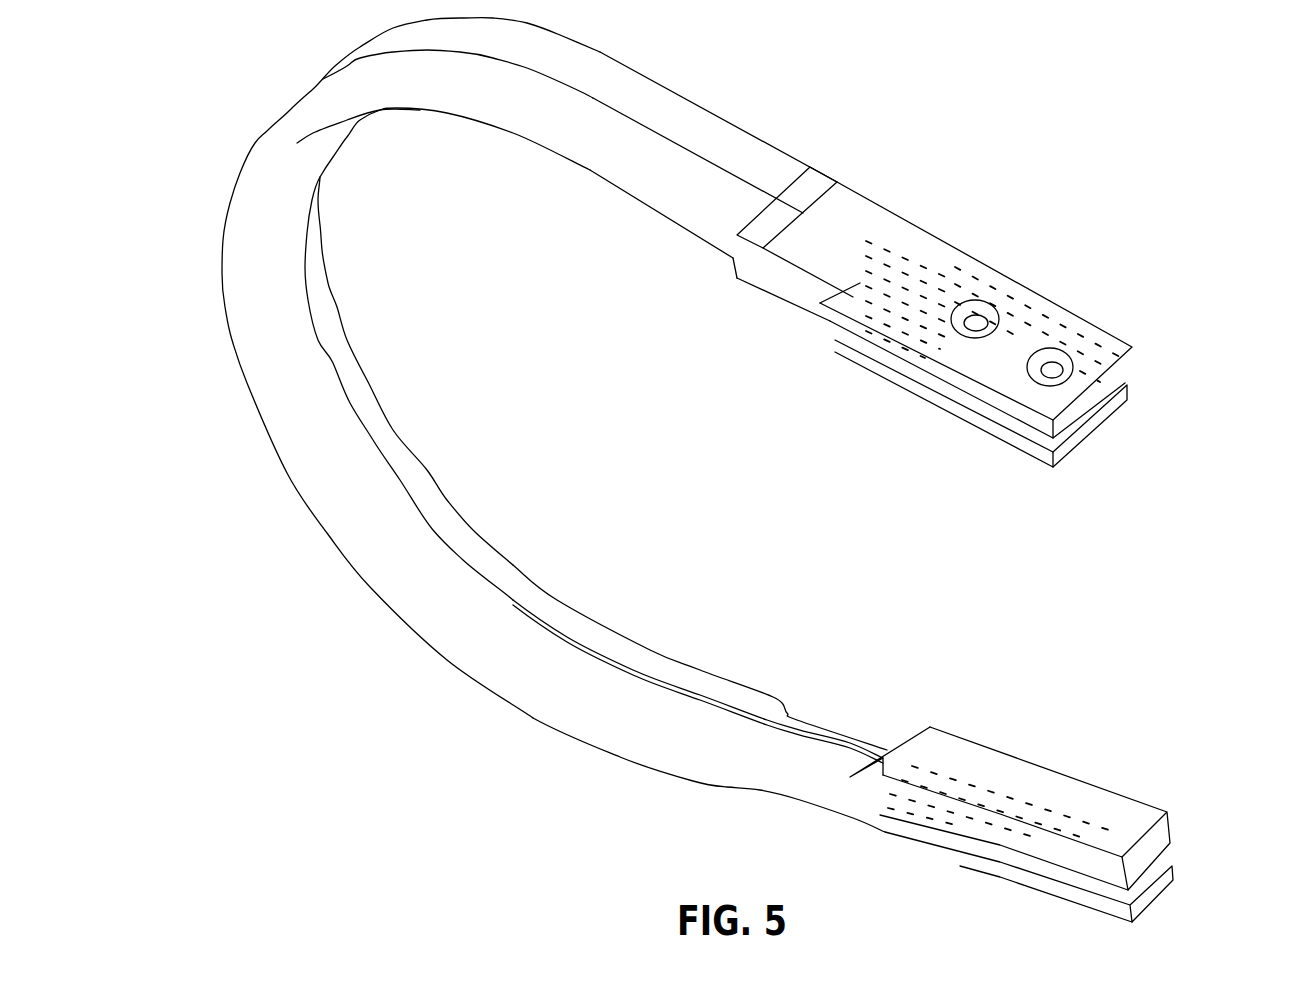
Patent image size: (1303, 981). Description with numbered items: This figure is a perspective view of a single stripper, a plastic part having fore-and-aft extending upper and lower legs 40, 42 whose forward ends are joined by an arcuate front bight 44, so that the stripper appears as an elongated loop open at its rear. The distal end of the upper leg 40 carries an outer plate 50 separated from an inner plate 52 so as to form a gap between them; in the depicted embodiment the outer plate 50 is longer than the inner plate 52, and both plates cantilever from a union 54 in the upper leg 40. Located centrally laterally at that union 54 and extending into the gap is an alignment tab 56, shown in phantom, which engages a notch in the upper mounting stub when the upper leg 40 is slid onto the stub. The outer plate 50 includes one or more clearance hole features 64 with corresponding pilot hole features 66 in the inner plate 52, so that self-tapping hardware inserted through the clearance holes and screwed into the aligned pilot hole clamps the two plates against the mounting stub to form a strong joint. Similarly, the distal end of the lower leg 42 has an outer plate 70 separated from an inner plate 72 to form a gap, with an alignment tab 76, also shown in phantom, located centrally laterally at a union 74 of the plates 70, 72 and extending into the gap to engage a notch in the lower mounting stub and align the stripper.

The upper leg 40 is at (770, 150).
The lower leg 42 is at (727, 787).
The arcuate front bight 44 is at (228, 320).
The outer plate 50 is at (1117, 362).
The inner plate 52 is at (1053, 467).
The union 54 is at (805, 296).
The alignment tab 56 is at (923, 322).
The clearance hole features 64 is at (1005, 328).
The pilot hole feature 66 is at (1102, 823).
The outer plate 70 is at (1173, 876).
The inner plate 72 is at (1168, 810).
The union 74 is at (863, 803).
The alignment tab 76 is at (1000, 833).